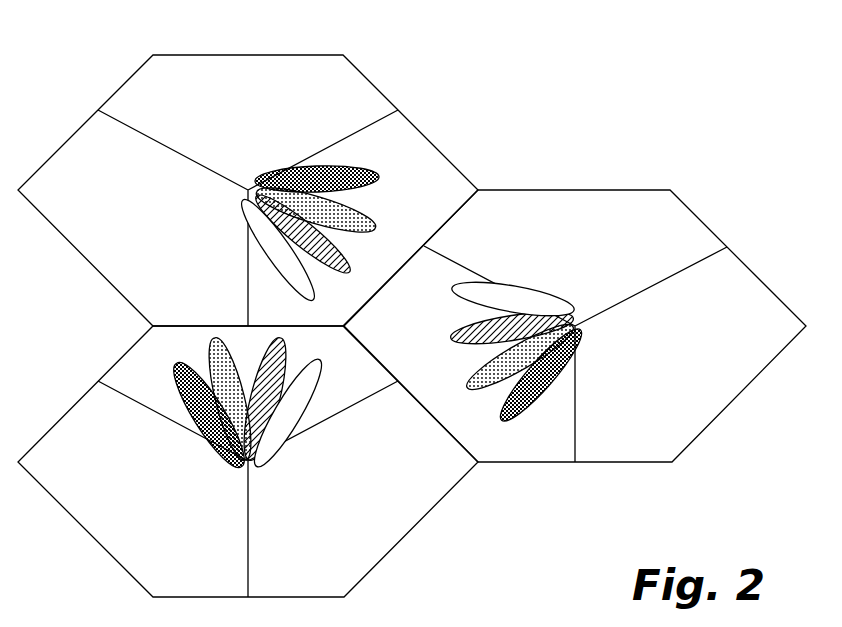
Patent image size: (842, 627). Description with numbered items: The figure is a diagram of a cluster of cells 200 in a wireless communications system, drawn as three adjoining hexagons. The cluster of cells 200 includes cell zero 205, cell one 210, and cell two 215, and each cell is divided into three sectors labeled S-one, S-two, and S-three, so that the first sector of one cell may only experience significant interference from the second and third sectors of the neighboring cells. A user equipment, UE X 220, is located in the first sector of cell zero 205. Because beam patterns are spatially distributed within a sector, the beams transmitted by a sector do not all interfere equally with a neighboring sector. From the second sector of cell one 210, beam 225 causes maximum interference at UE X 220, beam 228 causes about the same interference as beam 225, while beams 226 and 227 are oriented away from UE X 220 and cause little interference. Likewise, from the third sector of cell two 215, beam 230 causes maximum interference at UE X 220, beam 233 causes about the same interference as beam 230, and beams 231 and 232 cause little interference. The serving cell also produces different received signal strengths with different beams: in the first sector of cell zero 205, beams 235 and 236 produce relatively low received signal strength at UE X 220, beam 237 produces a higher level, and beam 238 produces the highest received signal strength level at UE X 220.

The cluster of cells 200 is at (690, 58).
The cell 0 205 is at (253, 463).
The cell 1 210 is at (247, 191).
The cell 2 215 is at (580, 328).
The UE X 220 is at (357, 385).
The beam 225 is at (270, 250).
The beam 226 is at (353, 220).
The beam 227 is at (330, 177).
The beam 228 is at (345, 258).
The beam 230 is at (457, 337).
The beam 231 is at (480, 375).
The beam 232 is at (513, 422).
The beam 233 is at (502, 292).
The beam 235 is at (218, 445).
The beam 236 is at (226, 358).
The beam 237 is at (273, 358).
The beam 238 is at (275, 448).